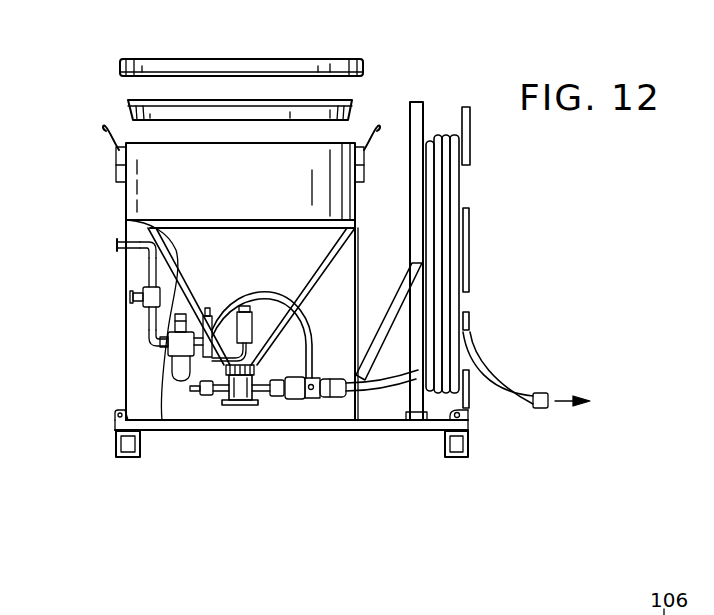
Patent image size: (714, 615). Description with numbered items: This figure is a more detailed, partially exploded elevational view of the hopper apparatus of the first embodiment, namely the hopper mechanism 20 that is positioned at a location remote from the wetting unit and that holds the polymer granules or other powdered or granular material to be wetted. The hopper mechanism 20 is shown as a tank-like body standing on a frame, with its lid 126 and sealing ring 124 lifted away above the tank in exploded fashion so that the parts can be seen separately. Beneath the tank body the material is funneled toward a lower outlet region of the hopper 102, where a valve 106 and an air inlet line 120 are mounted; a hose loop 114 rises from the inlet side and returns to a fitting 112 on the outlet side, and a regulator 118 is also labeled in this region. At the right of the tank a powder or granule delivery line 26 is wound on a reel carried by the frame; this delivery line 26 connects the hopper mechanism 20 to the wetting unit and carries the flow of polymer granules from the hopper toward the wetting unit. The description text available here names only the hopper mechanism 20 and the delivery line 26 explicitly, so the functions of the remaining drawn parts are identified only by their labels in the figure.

The hopper mechanism 20 is at (104, 205).
The powder or granule delivery line 26 is at (438, 136).
The hopper 102 is at (254, 270).
The metering valve 106 is at (238, 405).
The hose fitting 112 is at (321, 399).
The air hose loop 114 is at (318, 243).
The regulator 118 is at (499, 605).
The air inlet line 120 is at (193, 390).
The sealing ring 124 is at (352, 106).
The lid 126 is at (317, 62).